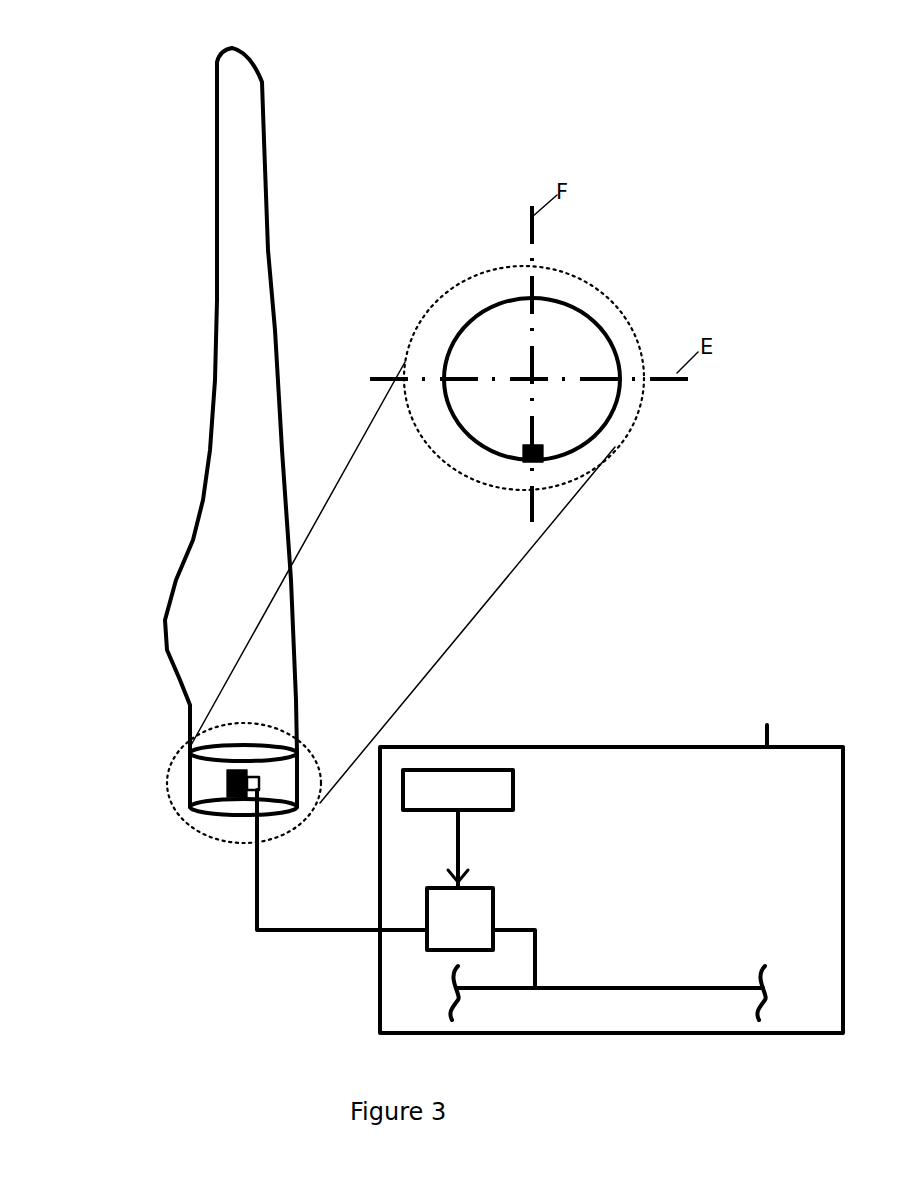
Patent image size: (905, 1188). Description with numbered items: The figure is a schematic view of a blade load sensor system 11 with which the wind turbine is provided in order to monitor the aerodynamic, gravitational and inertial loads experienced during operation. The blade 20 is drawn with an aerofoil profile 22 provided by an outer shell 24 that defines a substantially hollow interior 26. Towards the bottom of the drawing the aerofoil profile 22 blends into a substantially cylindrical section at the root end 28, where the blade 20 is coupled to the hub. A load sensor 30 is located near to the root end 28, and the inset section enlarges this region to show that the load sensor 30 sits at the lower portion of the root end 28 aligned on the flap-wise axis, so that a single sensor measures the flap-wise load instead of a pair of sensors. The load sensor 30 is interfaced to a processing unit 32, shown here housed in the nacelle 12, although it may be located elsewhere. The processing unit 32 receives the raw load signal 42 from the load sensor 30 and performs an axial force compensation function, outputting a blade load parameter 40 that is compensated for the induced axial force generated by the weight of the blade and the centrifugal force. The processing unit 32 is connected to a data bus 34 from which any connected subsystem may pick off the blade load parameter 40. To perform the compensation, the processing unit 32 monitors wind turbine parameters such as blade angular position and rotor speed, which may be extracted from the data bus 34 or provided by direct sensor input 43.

The blade load sensor system 11 is at (147, 1045).
The nacelle 12 is at (590, 745).
The blade 20 is at (232, 202).
The aerofoil profile 22 is at (243, 334).
The outer shell 24 is at (196, 523).
The hollow interior 26 is at (212, 808).
The root end 28 is at (185, 786).
The load sensor 30 is at (228, 782).
The processing unit 32 is at (452, 930).
The data bus 34 is at (655, 992).
The blade load parameter 40 is at (537, 963).
The raw load signal 42 is at (255, 926).
The sensor input 43 is at (458, 828).